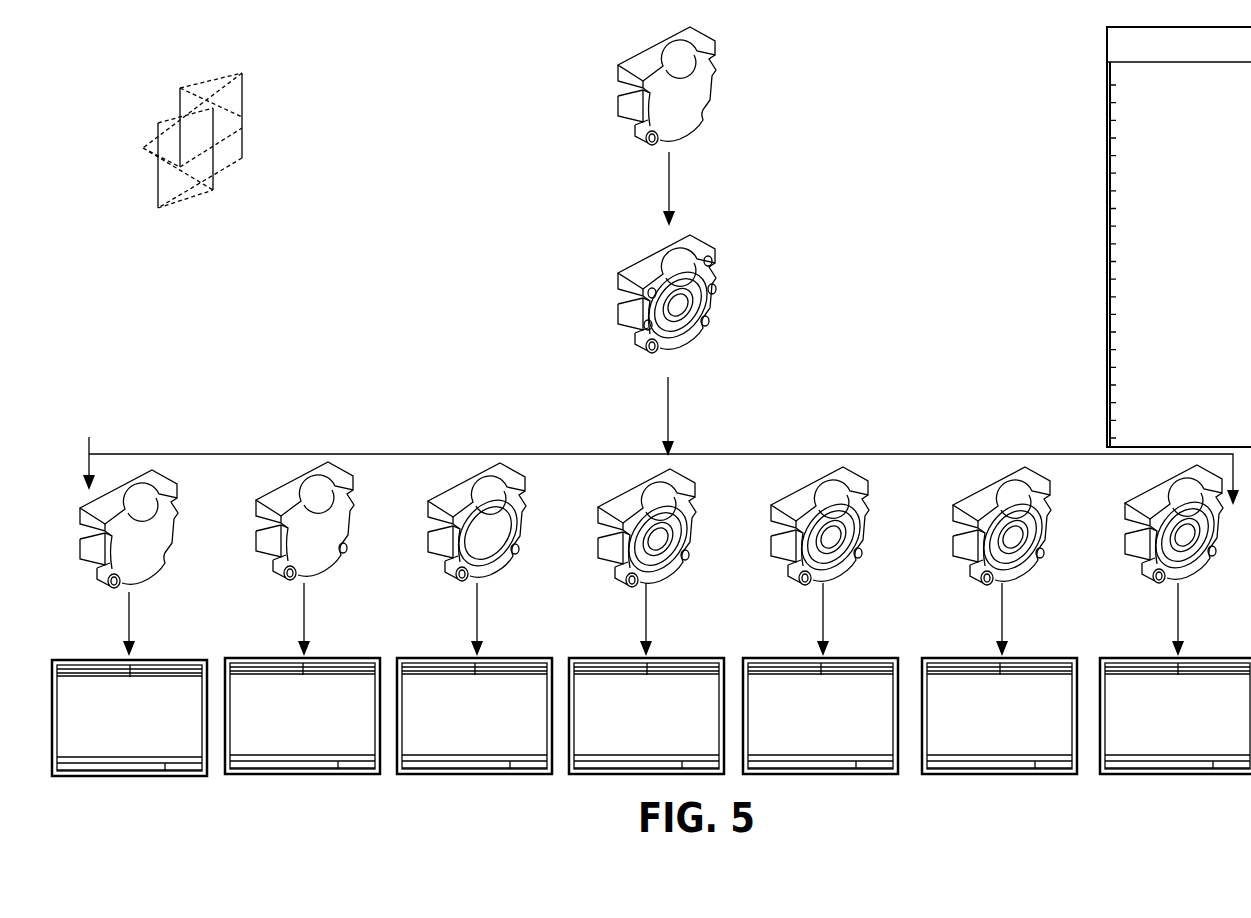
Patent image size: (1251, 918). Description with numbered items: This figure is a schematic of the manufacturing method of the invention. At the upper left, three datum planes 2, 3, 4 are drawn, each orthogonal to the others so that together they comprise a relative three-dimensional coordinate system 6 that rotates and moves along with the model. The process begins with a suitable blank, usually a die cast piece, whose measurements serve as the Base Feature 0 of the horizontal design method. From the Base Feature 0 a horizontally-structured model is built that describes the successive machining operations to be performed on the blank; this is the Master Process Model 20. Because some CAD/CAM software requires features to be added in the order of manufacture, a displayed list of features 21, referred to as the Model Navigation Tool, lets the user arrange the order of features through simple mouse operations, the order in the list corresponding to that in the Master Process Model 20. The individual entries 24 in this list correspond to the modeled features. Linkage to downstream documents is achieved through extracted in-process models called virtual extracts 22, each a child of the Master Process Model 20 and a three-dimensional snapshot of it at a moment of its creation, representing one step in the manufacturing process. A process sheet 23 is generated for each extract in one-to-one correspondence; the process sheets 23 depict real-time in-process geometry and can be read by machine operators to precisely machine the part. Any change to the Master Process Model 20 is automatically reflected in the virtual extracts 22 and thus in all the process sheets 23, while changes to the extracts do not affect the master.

The Base Feature 0 is at (718, 85).
The datum plane 2 is at (242, 128).
The datum plane 3 is at (213, 168).
The datum plane 4 is at (158, 208).
The three-dimensional coordinate system 6 is at (225, 153).
The Master Process Model 20 is at (718, 285).
The displayed list of features 21 is at (1107, 57).
The virtual extracts 22 is at (632, 490).
The process sheets 23 is at (118, 775).
The feature tree entries 24 is at (1107, 218).